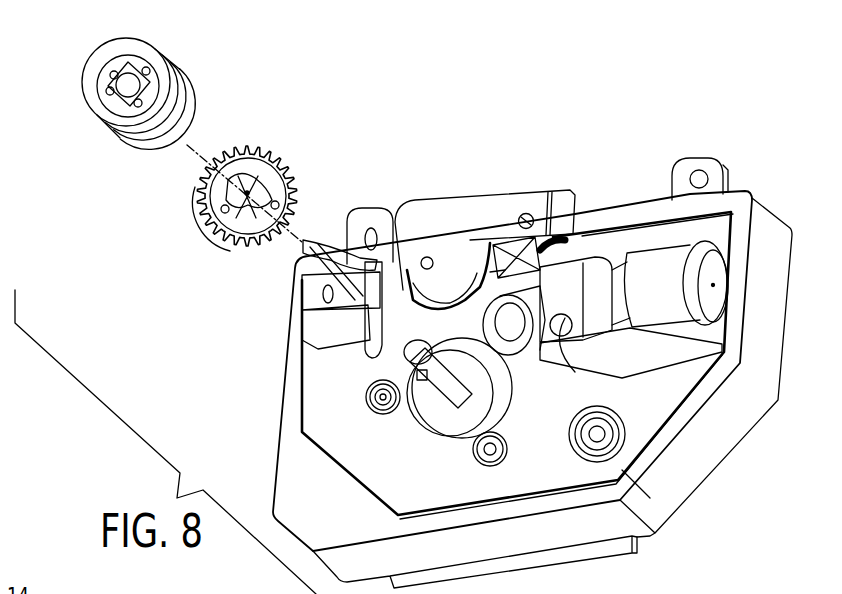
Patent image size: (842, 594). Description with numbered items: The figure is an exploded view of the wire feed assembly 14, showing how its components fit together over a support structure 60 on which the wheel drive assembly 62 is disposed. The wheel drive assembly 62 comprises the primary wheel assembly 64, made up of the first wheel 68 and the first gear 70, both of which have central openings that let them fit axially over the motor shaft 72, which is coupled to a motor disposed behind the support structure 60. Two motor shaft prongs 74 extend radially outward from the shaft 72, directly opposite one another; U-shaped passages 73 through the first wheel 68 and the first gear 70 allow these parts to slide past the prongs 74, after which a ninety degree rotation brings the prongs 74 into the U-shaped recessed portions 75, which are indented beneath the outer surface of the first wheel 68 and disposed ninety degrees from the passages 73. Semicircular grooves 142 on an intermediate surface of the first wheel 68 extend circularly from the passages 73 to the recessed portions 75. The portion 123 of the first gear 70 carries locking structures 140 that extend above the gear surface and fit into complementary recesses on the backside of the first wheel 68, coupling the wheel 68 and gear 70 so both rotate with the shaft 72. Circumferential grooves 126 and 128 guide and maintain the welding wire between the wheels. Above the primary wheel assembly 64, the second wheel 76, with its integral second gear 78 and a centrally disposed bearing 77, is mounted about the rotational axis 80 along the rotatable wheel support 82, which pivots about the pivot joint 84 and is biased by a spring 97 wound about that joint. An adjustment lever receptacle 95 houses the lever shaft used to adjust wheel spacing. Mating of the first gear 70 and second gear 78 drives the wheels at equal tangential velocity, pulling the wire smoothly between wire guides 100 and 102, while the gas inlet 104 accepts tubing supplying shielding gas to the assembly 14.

The wire feed assembly 14 is at (600, 145).
The support structure 60 is at (685, 421).
The wheel drive assembly 62 is at (268, 373).
The primary wheel assembly 64 is at (173, 208).
The first wheel 68 is at (131, 107).
The first gear 70 is at (203, 155).
The motor shaft 72 is at (462, 402).
The U-shaped passages 73 is at (130, 62).
The motor shaft prongs 74 is at (410, 290).
The U-shaped recessed portions 75 is at (108, 72).
The second wheel 76 is at (487, 257).
The bearing 77 is at (443, 290).
The second gear 78 is at (498, 273).
The rotational axis 80 is at (428, 257).
The wheel support 82 is at (452, 212).
The pivot joint 84 is at (527, 213).
The adjustment lever receptacle 95 is at (311, 240).
The spring 97 is at (560, 243).
The wire guide 100 is at (373, 370).
The wire guide 102 is at (478, 330).
The gas inlet 104 is at (588, 372).
The portion 123 is at (223, 216).
The circumferential groove 126 is at (147, 147).
The circumferential groove 128 is at (127, 143).
The locking structures 140 is at (243, 172).
The semicircular grooves 142 is at (112, 74).